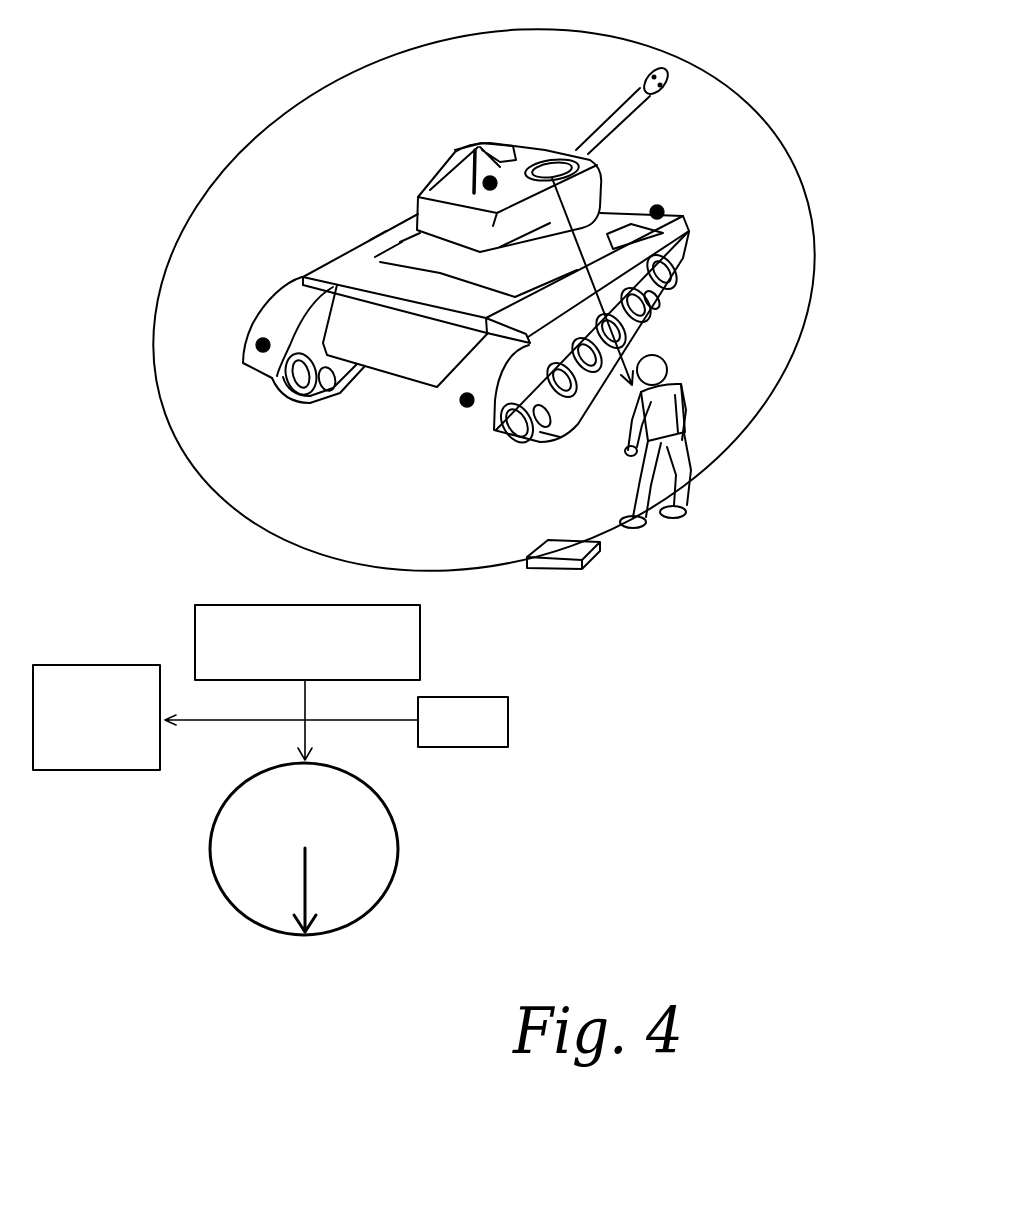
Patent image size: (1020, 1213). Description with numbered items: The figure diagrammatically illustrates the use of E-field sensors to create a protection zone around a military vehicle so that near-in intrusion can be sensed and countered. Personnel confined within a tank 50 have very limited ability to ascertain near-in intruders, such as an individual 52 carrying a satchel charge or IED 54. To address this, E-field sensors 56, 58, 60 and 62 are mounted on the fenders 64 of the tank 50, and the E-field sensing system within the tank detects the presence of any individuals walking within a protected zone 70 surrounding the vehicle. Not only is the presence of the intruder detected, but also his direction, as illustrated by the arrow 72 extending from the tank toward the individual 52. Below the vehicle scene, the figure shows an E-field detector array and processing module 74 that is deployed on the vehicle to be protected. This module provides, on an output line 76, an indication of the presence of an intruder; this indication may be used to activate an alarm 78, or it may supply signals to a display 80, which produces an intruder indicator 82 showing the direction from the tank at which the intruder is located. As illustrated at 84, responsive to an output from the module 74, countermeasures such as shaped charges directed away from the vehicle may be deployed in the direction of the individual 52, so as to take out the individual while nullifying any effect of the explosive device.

The tank 50 is at (391, 101).
The individual 52 is at (680, 393).
The satchel charge or IED 54 is at (548, 545).
The E-field sensor 56 is at (491, 180).
The E-field sensor 58 is at (662, 208).
The E-field sensor 60 is at (462, 403).
The E-field sensor 62 is at (257, 346).
The fenders 64 is at (378, 235).
The protected zone 70 is at (815, 235).
The arrow 72 is at (607, 176).
The E-field detector array and processing module 74 is at (247, 605).
The output line 76 is at (307, 730).
The alarm 78 is at (508, 727).
The display 80 is at (373, 842).
The intruder indicator 82 is at (307, 880).
The countermeasures deployment 84 is at (103, 665).